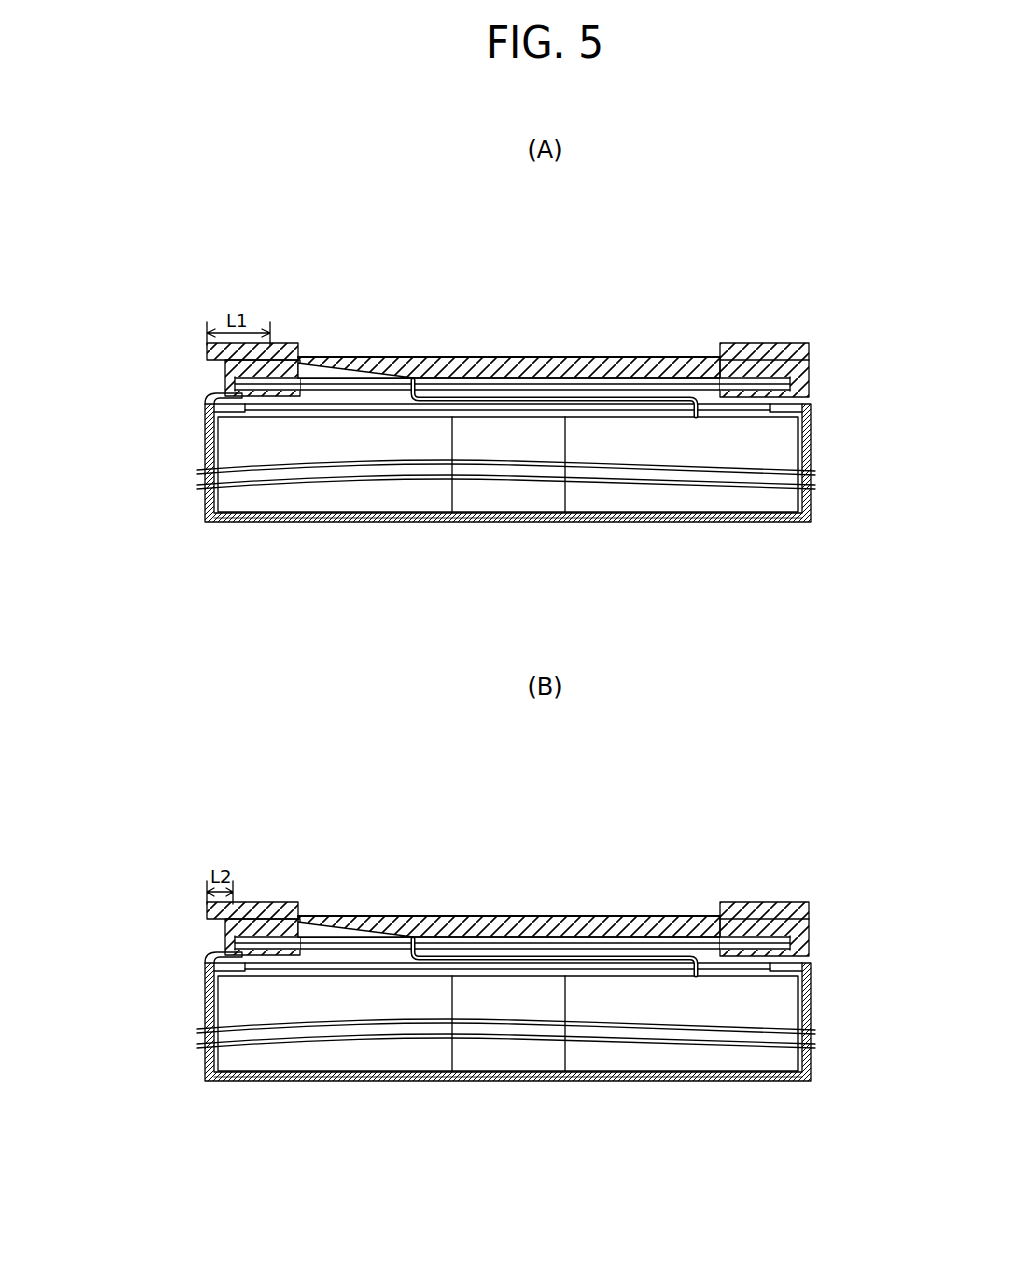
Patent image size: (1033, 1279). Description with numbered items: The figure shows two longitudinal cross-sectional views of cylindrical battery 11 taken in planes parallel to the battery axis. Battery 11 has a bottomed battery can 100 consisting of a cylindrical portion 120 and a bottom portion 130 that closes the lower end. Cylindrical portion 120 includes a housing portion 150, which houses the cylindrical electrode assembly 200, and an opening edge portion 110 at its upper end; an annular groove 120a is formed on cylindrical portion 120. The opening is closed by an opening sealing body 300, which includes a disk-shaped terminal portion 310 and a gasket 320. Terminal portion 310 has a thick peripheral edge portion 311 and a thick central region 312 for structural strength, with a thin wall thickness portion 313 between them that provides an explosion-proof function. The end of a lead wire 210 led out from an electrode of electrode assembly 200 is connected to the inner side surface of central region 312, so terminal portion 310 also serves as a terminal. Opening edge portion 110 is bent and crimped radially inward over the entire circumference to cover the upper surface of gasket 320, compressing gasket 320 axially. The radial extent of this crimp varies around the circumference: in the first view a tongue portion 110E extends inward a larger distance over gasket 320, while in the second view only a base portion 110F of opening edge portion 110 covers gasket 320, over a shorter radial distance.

The battery 11 is at (681, 284).
The battery can 100 is at (919, 583).
The opening edge portion 110 is at (808, 371).
The tongue portion 110E is at (782, 345).
The base portion 110F is at (764, 903).
The cylindrical portion 120 is at (864, 355).
The annular groove 120a is at (212, 397).
The bottom portion 130 is at (655, 521).
The housing portion 150 is at (812, 400).
The electrode assembly 200 is at (206, 447).
The lead wire 210 is at (562, 385).
The opening sealing body 300 is at (378, 258).
The terminal portion 310 is at (430, 298).
The peripheral edge portion 311 is at (350, 617).
The central region 312 is at (445, 357).
The thin wall thickness portion 313 is at (346, 360).
The gasket 320 is at (297, 352).